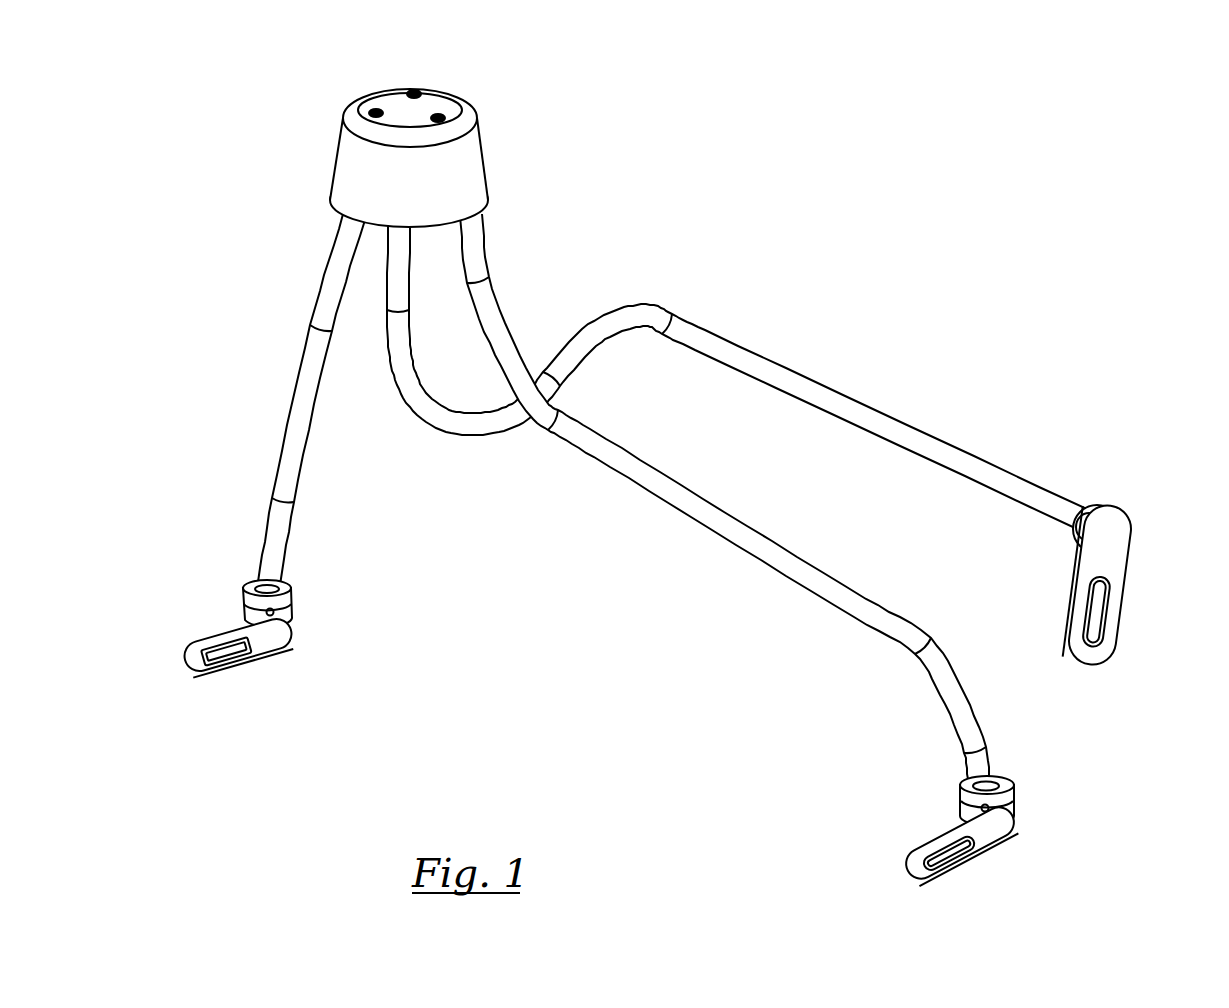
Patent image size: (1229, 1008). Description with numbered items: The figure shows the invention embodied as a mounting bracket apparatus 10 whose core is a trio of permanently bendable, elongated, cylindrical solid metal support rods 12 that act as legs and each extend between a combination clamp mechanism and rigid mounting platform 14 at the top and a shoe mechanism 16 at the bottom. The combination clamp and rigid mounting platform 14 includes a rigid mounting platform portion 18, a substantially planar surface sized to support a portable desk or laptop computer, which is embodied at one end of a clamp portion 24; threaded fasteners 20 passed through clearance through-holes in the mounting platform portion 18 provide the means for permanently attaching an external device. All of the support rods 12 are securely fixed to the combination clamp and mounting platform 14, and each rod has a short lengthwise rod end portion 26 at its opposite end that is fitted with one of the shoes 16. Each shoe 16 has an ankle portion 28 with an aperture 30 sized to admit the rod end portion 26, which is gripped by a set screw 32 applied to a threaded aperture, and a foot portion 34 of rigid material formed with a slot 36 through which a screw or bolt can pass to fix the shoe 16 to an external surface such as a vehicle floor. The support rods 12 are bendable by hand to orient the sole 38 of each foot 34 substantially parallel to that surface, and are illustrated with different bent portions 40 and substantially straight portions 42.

The mounting bracket apparatus 10 is at (568, 116).
The support rods 12 is at (652, 499).
The combination clamp mechanism and rigid mounting platform 14 is at (415, 139).
The shoe mechanism 16 is at (659, 679).
The mounting platform portion 18 is at (433, 104).
The threaded fasteners 20 is at (414, 92).
The clamp portion 24 is at (484, 163).
The rod end portion 26 is at (259, 580).
The ankle portion 28 is at (291, 588).
The aperture 30 is at (245, 578).
The set screw 32 is at (290, 606).
The foot portion 34 is at (270, 650).
The slot 36 is at (208, 648).
The sole 38 is at (245, 673).
The bent portions 40 is at (331, 257).
The substantially straight portions 42 is at (485, 250).